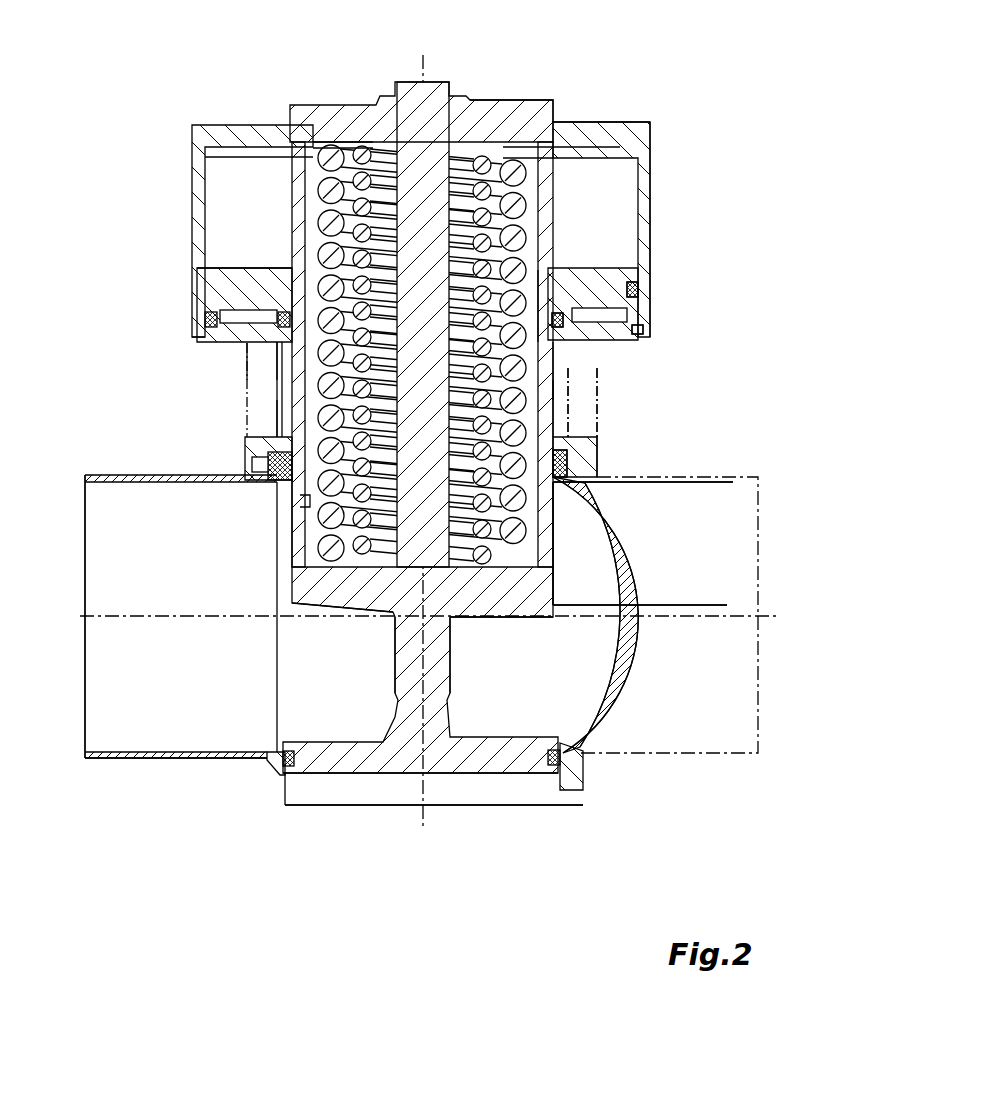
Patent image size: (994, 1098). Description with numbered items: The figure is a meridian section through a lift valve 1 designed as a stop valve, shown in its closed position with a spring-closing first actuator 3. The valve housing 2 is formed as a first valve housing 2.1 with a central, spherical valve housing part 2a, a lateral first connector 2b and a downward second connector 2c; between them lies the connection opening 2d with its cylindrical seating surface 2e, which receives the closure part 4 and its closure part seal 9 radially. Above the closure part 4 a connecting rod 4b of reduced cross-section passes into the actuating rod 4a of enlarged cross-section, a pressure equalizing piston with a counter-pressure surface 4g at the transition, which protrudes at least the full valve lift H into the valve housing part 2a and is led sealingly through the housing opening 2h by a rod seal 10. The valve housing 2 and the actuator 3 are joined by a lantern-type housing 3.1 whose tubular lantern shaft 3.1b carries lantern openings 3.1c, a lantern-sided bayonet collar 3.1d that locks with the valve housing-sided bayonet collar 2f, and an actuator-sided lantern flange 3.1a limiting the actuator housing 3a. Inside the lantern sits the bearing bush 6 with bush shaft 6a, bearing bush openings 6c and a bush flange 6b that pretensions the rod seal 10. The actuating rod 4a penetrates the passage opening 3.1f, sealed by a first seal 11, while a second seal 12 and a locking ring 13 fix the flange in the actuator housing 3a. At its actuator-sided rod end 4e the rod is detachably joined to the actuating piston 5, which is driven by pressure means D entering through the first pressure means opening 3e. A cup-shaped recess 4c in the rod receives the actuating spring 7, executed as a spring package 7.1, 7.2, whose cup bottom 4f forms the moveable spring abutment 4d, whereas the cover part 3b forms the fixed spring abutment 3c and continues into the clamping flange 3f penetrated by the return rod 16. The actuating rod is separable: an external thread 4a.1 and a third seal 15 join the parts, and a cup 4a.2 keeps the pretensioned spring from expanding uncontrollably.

The lift valve 1 is at (240, 766).
The valve housing 2 is at (649, 694).
The first valve housing 2.1 is at (600, 615).
The valve housing part 2a is at (625, 650).
The first connector 2b is at (183, 758).
The second connector 2c is at (558, 799).
The connection opening 2d is at (425, 779).
The seating surface 2e is at (554, 751).
The valve housing-sided bayonet collar 2f is at (609, 457).
The housing opening 2h is at (546, 473).
The first actuator 3 is at (657, 116).
The actuator housing 3a is at (644, 190).
The cover part 3b is at (603, 133).
The actuator-sided spring abutment 3c is at (497, 143).
The first pressure means opening 3e is at (203, 332).
The clamping flange 3f is at (297, 105).
The lantern-type housing 3.1 is at (615, 385).
The actuator-sided lantern flange 3.1a is at (612, 328).
The lantern shaft 3.1b is at (583, 402).
The lantern opening 3.1c is at (591, 390).
The lantern-sided bayonet collar 3.1d is at (562, 473).
The passage opening 3.1f is at (533, 300).
The closure part 4 is at (325, 759).
The actuating rod of enlarged cross-section 4a is at (295, 403).
The external thread 4a.1 is at (298, 480).
The cup 4a.2 is at (303, 544).
The connecting rod of reduced cross-section 4b is at (421, 698).
The cup-shaped recess 4c is at (298, 516).
The closure part-sided spring abutment 4d is at (321, 613).
The actuator-sided rod end 4e is at (299, 289).
The cup bottom 4f is at (347, 605).
The counter-pressure surface 4g is at (497, 615).
The actuating piston 5 is at (238, 276).
The bearing bush 6 is at (268, 384).
The bush shaft 6a is at (282, 373).
The valve housing-sided bush flange 6b is at (268, 446).
The bearing bush opening 6c is at (560, 387).
The actuating spring 7 is at (310, 189).
The actuating spring of spring package 7.1 is at (318, 304).
The actuating spring of spring package 7.2 is at (422, 355).
The closure part seal 9 is at (287, 761).
The rod seal 10 is at (567, 480).
The first seal 11 is at (558, 312).
The second seal 12 is at (637, 315).
The locking ring 13 is at (639, 330).
The third seal 15 is at (565, 453).
The return rod 16 is at (480, 120).
The pressure means D is at (244, 349).
The valve lift H is at (720, 484).